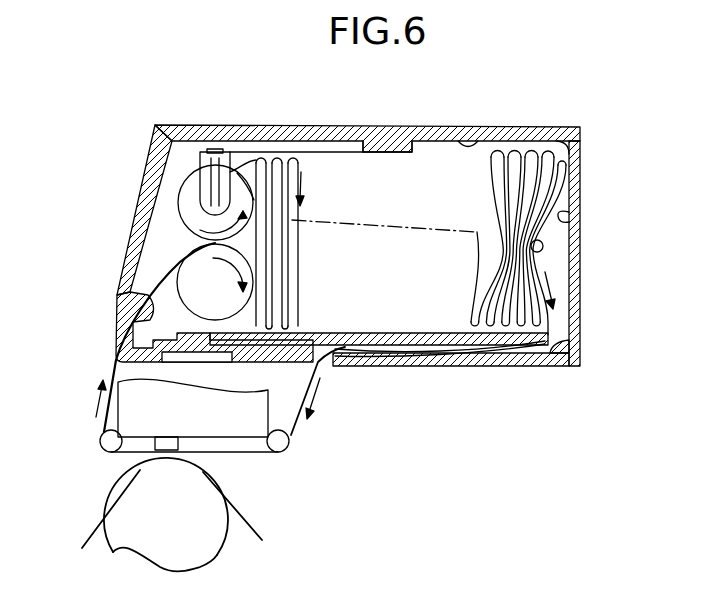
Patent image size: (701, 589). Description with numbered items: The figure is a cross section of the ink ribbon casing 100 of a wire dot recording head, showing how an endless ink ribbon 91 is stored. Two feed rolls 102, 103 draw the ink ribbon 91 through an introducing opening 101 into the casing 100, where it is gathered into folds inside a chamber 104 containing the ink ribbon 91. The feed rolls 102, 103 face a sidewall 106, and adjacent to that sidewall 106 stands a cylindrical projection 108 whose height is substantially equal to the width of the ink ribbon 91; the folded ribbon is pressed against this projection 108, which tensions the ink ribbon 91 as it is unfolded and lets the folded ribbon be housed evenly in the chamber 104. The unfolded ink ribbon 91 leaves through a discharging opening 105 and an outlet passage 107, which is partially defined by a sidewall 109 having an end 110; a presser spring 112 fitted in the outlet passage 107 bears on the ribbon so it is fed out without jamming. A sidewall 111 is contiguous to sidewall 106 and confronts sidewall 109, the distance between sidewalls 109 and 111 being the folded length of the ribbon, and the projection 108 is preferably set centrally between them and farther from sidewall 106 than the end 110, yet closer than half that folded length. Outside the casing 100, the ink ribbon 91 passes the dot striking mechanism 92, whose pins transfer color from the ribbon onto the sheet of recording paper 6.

The ink ribbon casing 100 is at (599, 143).
The opening for introducing the ink ribbon 101 is at (113, 352).
The feed roll 102 is at (195, 263).
The feed roll 103 is at (190, 200).
The chamber 104 is at (432, 170).
The opening for discharging the ink ribbon 105 is at (560, 323).
The sidewall 106 is at (582, 222).
The outlet passage 107 is at (426, 367).
The cylindrical projection 108 is at (543, 247).
The sidewall 109 is at (487, 366).
The end of the sidewall 110 is at (548, 368).
The sidewall 111 is at (485, 128).
The presser spring 112 is at (333, 367).
The ink ribbon 91 is at (298, 158).
The dot striking mechanism 92 is at (167, 418).
The sheet of recording paper 6 is at (240, 503).